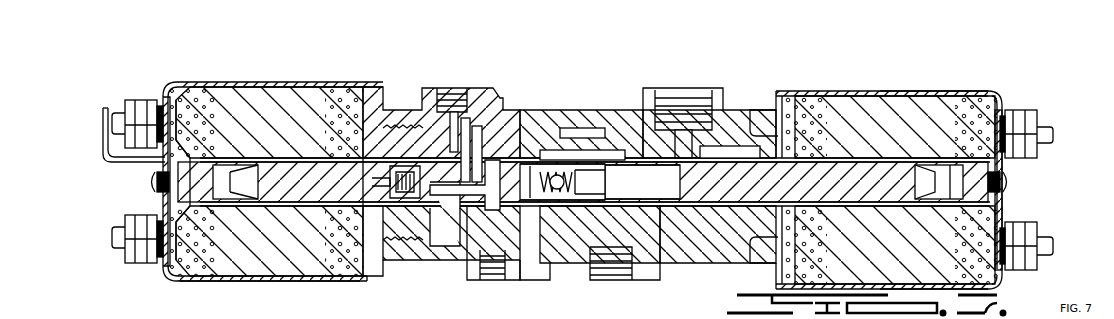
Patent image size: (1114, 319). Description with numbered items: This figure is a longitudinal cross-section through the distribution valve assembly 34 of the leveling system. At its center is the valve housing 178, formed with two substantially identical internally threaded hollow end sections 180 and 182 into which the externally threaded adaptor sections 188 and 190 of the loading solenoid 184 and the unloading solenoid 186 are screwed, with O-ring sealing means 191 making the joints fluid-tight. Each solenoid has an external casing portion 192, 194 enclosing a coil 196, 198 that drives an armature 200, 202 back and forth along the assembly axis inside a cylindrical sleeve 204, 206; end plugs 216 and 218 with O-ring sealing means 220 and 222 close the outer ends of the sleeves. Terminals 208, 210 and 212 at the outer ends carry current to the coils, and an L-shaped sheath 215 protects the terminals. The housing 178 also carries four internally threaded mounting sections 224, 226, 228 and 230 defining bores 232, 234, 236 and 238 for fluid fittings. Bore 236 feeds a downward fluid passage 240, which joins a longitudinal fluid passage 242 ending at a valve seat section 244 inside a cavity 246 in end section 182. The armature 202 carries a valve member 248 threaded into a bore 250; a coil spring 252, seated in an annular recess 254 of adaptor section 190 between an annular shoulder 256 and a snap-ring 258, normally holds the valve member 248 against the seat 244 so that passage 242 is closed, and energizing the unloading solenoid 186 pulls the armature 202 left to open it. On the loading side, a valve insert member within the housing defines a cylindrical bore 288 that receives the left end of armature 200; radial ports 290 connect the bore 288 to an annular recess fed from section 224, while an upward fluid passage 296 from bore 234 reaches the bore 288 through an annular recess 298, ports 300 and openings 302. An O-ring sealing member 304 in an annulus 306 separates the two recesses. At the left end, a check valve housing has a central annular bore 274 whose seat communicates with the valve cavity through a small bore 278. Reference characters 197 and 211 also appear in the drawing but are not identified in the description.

The valve assembly 34 is at (867, 78).
The central valve housing 178 is at (590, 108).
The hollow end section 180 is at (742, 108).
The hollow end section 182 is at (398, 110).
The loading solenoid 184 is at (975, 85).
The unloading solenoid 186 is at (300, 74).
The adaptor section 188 is at (832, 212).
The adaptor section 190 is at (408, 262).
The O-ring sealing means 191 is at (360, 282).
The external casing portion 192 is at (888, 92).
The external casing portion 194 is at (232, 282).
The coil 196 is at (826, 96).
The shell end 197 is at (413, 309).
The coil 198 is at (238, 74).
The solenoid armature 200 is at (825, 112).
The solenoid armature 202 is at (272, 222).
The cylindrical sleeve 204 is at (880, 126).
The cylindrical sleeve 206 is at (216, 222).
The terminal 208 is at (1035, 104).
The terminal 210 is at (1033, 219).
The bolt 211 is at (117, 205).
The terminal 212 is at (138, 89).
The L-shaped sheath 215 is at (102, 126).
The end plug 216 is at (943, 265).
The end plug 218 is at (194, 148).
The O-ring sealing means 220 is at (583, 208).
The O-ring sealing means 222 is at (269, 122).
The mounting section 224 is at (714, 88).
The mounting section 226 is at (662, 278).
The mounting section 228 is at (535, 108).
The mounting section 230 is at (470, 282).
The bore 232 is at (687, 120).
The bore 234 is at (640, 288).
The bore 236 is at (546, 83).
The bore 238 is at (507, 240).
The fluid passage 240 is at (526, 122).
The fluid passage 242 is at (496, 154).
The valve seat section 244 is at (465, 203).
The cavity 246 is at (466, 84).
The valve member 248 is at (456, 245).
The bore 250 is at (372, 180).
The coil spring 252 is at (460, 100).
The annular recess 254 is at (326, 134).
The annular shoulder 256 is at (328, 225).
The snap-ring 258 is at (495, 150).
The central annular bore 274 is at (566, 138).
The bore 278 is at (579, 225).
The cylindrical bore 288 is at (690, 180).
The ports 290 is at (737, 145).
The fluid passage 296 is at (617, 240).
The annular recess 298 is at (566, 245).
The ports 300 is at (648, 172).
The openings 302 is at (688, 250).
The O-ring sealing member 304 is at (597, 122).
The annulus 306 is at (718, 234).